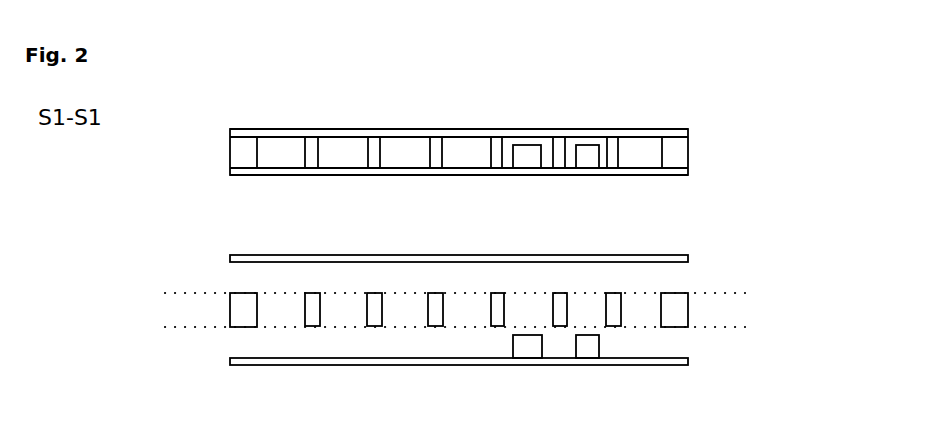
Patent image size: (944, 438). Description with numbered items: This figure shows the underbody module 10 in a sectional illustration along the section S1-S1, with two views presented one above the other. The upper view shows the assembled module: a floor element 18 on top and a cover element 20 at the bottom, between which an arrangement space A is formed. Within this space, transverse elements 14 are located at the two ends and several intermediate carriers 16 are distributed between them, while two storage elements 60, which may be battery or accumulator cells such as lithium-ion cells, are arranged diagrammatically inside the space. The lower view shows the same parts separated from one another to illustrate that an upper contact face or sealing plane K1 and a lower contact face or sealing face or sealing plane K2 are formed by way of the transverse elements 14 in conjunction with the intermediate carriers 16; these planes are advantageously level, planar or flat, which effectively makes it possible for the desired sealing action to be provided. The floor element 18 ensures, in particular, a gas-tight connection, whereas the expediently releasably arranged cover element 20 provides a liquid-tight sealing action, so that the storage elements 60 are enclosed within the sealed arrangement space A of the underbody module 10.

The underbody module 10 is at (767, 155).
The transverse elements 14 is at (243, 150).
The intermediate carriers 16 is at (312, 140).
The floor element 18 is at (285, 133).
The cover element 20 is at (343, 170).
The storage elements 60 is at (527, 158).
The arrangement space A is at (282, 162).
The upper contact face or sealing plane K1 is at (735, 290).
The lower contact face or sealing plane K2 is at (735, 330).